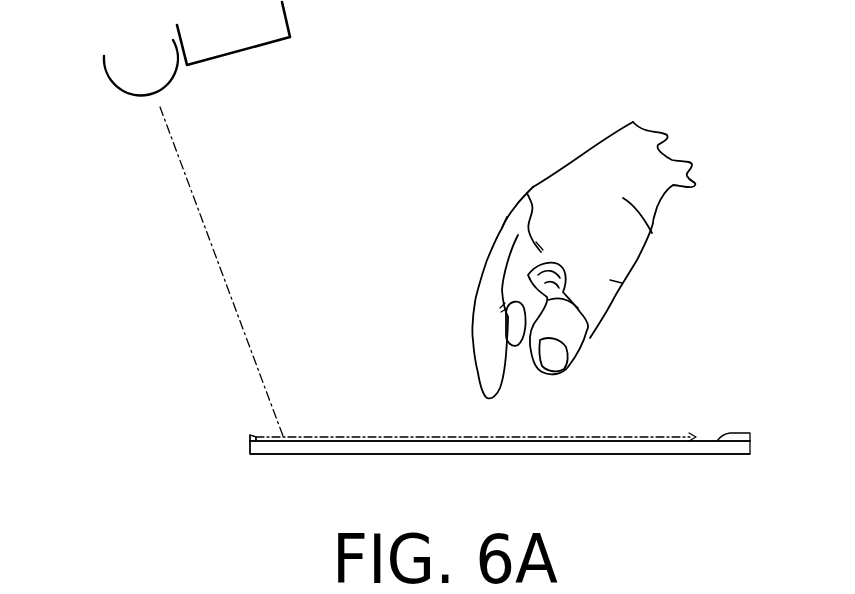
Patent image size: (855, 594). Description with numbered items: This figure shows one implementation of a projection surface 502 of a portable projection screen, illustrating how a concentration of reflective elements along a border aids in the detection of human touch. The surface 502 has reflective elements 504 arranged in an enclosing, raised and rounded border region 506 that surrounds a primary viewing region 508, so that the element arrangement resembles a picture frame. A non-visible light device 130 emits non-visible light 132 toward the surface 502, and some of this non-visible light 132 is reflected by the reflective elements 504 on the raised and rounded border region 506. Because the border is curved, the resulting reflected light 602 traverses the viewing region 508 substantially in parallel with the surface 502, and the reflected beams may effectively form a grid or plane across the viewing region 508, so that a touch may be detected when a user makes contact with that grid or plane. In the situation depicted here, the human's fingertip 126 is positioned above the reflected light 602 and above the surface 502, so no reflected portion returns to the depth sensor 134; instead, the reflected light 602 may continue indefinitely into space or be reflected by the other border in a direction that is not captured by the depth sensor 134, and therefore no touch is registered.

The fingertip 126 is at (488, 377).
The non-visible light device 130 is at (132, 67).
The non-visible light 132 is at (197, 212).
The depth sensor 134 is at (252, 37).
The surface 502 is at (720, 410).
The reflective elements 504 is at (280, 434).
The border region 506 is at (250, 444).
The primary viewing region 508 is at (502, 445).
The reflected light 602 is at (417, 435).